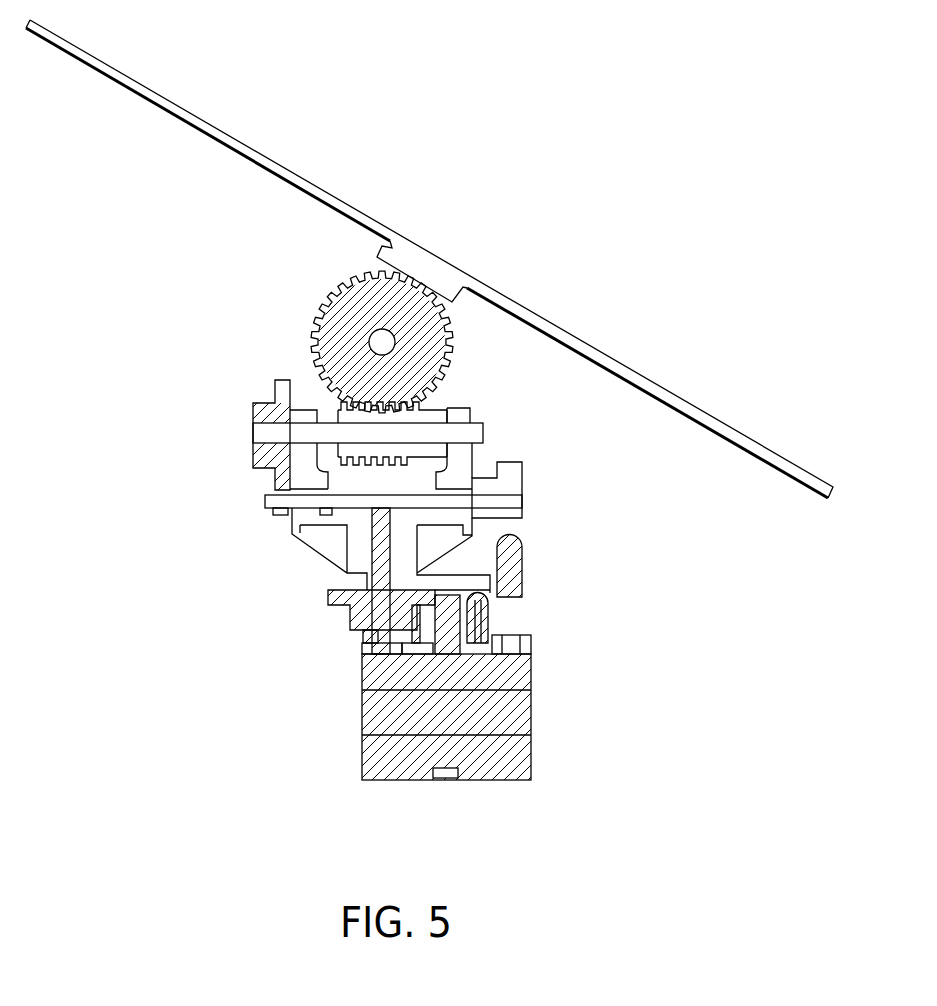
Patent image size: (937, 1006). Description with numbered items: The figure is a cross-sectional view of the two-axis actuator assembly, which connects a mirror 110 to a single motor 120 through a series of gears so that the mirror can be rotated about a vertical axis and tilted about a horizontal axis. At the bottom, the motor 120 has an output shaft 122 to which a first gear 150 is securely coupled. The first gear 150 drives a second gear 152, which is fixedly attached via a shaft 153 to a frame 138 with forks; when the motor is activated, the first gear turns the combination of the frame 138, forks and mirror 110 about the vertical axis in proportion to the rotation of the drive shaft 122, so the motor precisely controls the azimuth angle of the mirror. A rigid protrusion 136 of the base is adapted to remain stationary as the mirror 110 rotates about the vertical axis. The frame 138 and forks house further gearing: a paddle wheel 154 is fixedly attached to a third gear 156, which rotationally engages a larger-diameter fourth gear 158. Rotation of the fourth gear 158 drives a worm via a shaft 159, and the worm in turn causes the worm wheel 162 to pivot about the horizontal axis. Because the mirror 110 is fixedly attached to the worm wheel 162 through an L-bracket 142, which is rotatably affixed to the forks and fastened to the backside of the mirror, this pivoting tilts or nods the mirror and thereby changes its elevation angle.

The mirror 110 is at (584, 336).
The L-bracket 142 is at (388, 243).
The worm wheel 162 is at (325, 305).
The shaft 159 is at (263, 434).
The fourth gear 158 is at (253, 405).
The third gear 156 is at (283, 512).
The paddle wheel 154 is at (512, 485).
The frame 138 is at (292, 533).
The shaft 153 is at (380, 558).
The second gear 152 is at (335, 597).
The rigid protrusion 136 is at (513, 553).
The first gear 150 is at (450, 604).
The motor output shaft 122 is at (448, 642).
The motor 120 is at (535, 716).